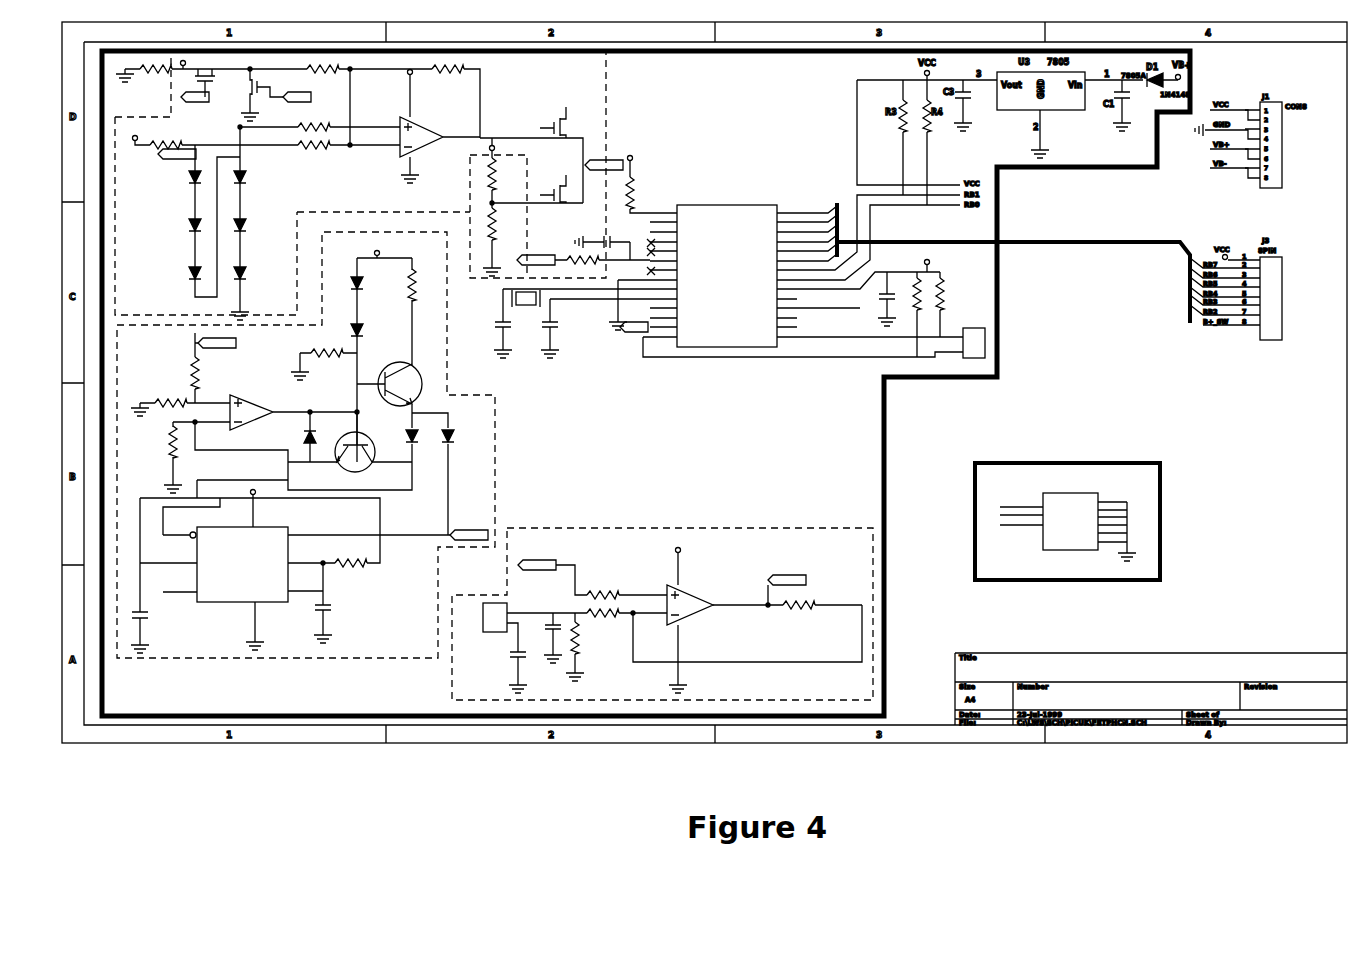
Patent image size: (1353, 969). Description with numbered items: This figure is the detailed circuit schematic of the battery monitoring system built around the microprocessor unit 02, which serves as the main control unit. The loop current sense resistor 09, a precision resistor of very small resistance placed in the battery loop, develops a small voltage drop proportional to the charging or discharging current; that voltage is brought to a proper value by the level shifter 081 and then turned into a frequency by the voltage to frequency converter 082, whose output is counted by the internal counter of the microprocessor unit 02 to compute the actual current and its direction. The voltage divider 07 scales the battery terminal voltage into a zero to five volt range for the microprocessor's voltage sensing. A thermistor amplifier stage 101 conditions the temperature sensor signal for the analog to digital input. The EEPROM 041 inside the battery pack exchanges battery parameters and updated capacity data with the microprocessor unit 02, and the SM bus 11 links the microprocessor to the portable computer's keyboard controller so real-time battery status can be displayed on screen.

The loop current sense resistor 09 is at (160, 60).
The level shifter 081 is at (546, 164).
The voltage divider 07 is at (440, 212).
The microprocessor unit 02 is at (712, 210).
The voltage to frequency converter 082 is at (307, 445).
The thermistor temperature amplifier 101 is at (662, 614).
The EEPROM 041 is at (1067, 508).
The SM bus 11 is at (848, 358).